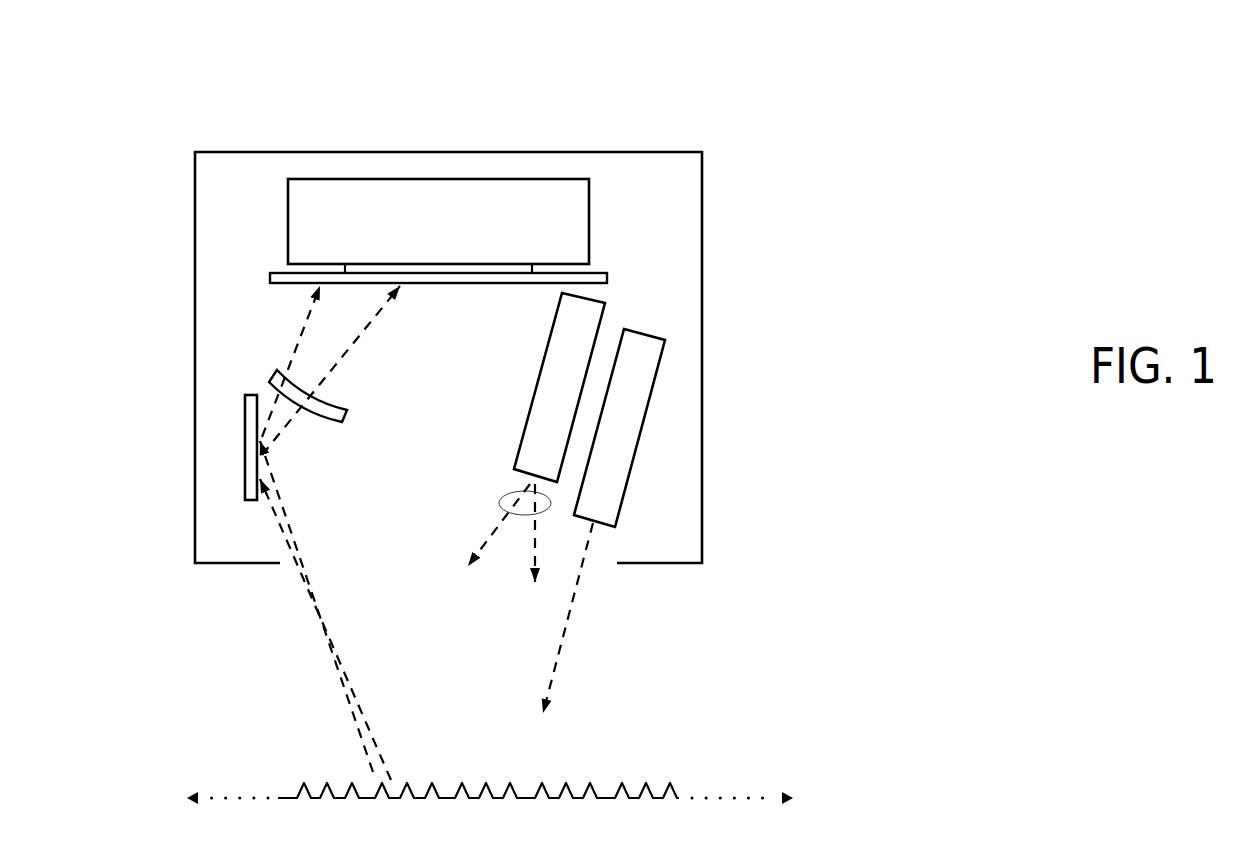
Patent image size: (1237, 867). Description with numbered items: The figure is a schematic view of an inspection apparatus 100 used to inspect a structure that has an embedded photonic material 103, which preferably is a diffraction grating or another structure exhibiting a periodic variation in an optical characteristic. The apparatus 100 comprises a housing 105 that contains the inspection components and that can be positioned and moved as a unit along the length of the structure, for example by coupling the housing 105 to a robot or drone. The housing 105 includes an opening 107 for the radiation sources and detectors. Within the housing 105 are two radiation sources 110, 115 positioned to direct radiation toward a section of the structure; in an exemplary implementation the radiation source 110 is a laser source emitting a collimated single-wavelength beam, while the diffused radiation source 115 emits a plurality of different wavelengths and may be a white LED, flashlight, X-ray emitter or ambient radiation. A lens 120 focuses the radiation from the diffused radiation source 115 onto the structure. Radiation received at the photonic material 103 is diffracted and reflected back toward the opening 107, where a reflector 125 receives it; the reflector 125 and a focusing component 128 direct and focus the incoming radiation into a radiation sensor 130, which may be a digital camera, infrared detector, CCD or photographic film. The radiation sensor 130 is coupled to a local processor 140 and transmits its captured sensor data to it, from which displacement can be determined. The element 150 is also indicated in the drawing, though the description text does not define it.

The inspection apparatus 100 is at (522, 92).
The photonic material 103 is at (327, 783).
The housing 105 is at (702, 282).
The opening 107 is at (392, 564).
The radiation source 110 is at (620, 507).
The diffused radiation source 115 is at (527, 422).
The lens 120 is at (510, 490).
The reflector 125 is at (245, 423).
The focusing component 128 is at (326, 418).
The radiation sensor 130 is at (598, 273).
The local processor 140 is at (589, 222).
The direction of surface motion 150 is at (616, 745).